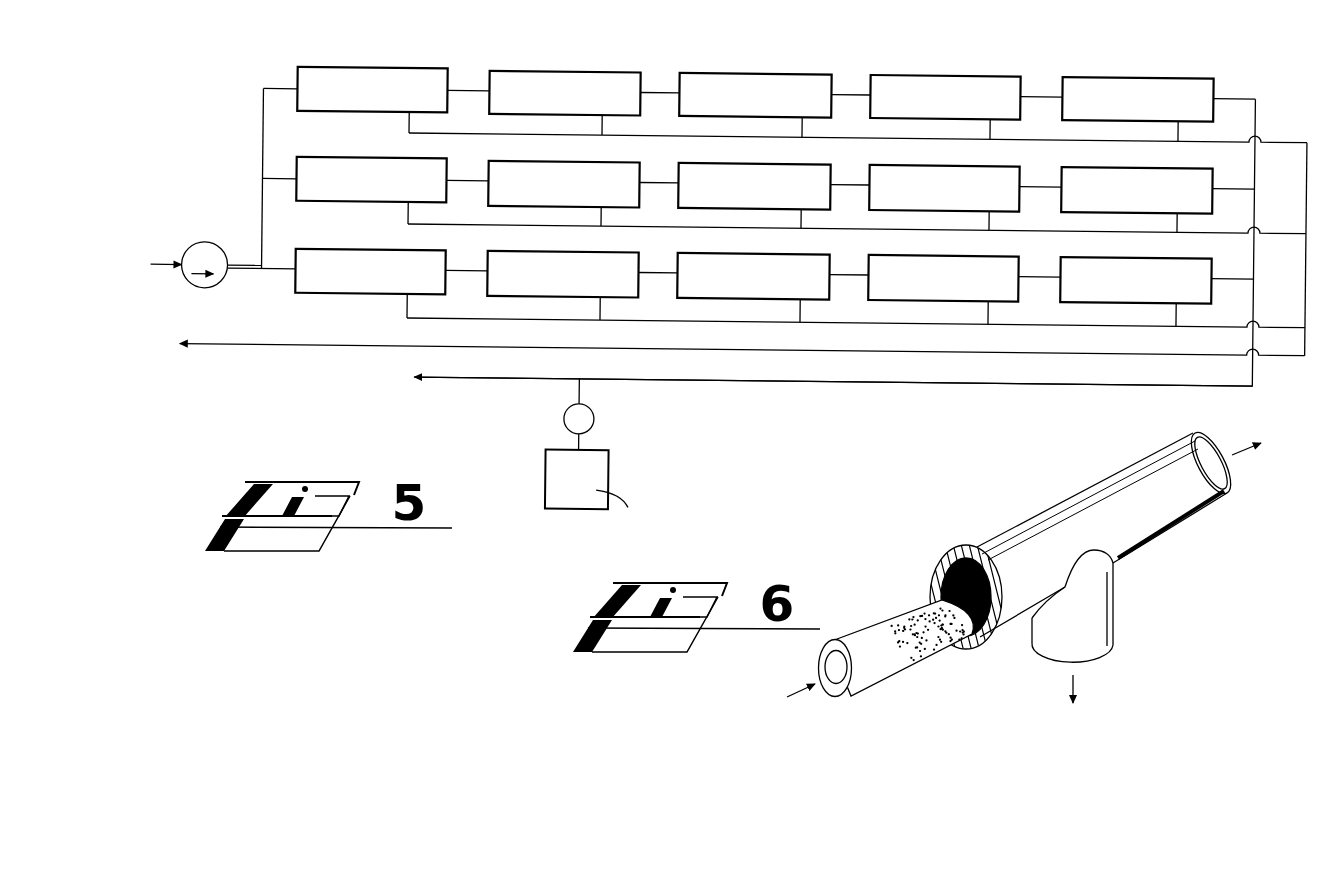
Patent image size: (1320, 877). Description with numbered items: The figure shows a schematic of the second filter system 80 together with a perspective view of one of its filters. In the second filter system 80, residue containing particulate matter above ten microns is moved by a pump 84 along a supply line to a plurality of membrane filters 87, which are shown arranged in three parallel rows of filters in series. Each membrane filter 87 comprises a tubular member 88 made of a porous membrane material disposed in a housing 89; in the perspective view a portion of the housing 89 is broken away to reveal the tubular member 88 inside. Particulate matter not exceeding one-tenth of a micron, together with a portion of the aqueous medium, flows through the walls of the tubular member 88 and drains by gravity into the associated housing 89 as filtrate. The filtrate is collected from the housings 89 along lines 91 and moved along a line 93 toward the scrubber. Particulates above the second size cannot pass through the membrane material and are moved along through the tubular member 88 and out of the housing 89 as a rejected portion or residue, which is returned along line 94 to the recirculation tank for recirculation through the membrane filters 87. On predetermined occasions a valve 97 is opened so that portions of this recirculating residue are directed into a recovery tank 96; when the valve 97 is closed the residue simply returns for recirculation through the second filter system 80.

In FIG. 5, the second filter system 80 is at (728, 270).
In FIG. 5, the pump 84 is at (216, 245).
In FIG. 5, the membrane filter 87 is at (347, 67).
In FIG. 6, the membrane filter 87 is at (1024, 565).
In FIG. 6, the tubular member 88 is at (905, 594).
In FIG. 6, the housing 89 is at (1057, 500).
In FIG. 5, the line 91 is at (865, 134).
In FIG. 5, the line 93 is at (396, 348).
In FIG. 5, the line 94 is at (497, 380).
In FIG. 5, the recovery tank 96 is at (613, 478).
In FIG. 5, the valve 97 is at (598, 414).